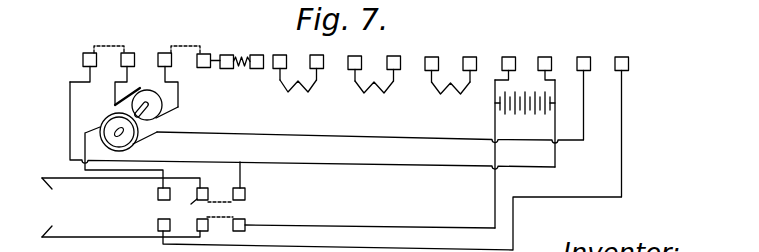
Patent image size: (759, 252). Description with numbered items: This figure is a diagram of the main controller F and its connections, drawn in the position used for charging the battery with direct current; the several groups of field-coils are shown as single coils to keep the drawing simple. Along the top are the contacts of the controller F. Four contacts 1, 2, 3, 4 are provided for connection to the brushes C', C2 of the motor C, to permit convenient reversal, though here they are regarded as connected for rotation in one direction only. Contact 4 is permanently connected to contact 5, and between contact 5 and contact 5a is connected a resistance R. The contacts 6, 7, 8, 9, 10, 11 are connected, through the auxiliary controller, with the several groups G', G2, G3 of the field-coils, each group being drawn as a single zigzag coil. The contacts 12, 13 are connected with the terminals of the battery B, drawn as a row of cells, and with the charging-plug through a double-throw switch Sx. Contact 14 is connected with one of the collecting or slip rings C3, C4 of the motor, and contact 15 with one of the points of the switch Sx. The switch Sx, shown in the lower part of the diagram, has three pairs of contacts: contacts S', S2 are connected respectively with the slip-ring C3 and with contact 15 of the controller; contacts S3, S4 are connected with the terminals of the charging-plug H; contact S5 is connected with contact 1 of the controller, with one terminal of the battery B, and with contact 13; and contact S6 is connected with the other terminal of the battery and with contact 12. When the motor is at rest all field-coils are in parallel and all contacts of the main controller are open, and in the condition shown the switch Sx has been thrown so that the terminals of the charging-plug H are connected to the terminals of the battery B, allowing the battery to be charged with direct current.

The controller F is at (83, 60).
The contact 1 is at (83, 56).
The contact 2 is at (125, 68).
The contact 3 is at (168, 69).
The contact 4 is at (204, 50).
The contact 5 is at (227, 51).
The contact 5a is at (250, 50).
The contact 6 is at (280, 59).
The contact 7 is at (317, 59).
The contact 8 is at (355, 60).
The contact 9 is at (394, 60).
The contact 10 is at (431, 61).
The contact 11 is at (470, 61).
The contact 12 is at (506, 60).
The contact 13 is at (546, 60).
The contact 14 is at (585, 90).
The contact 15 is at (623, 119).
The resistance R is at (243, 67).
The group of field-coils G' is at (298, 98).
The group of field-coils G2 is at (374, 99).
The group of field-coils G3 is at (451, 100).
The battery B is at (525, 149).
The armature C is at (151, 101).
The brush C' is at (132, 86).
The brush C2 is at (180, 109).
The slip-ring C3 is at (103, 121).
The slip-ring C4 is at (155, 144).
The charging-plug H is at (52, 207).
The switch contact S' is at (145, 195).
The switch contact S2 is at (158, 225).
The switch contact S3 is at (208, 189).
The switch contact S4 is at (208, 226).
The switch contact S5 is at (245, 192).
The switch contact S6 is at (245, 229).
The double-throw switch Sx is at (184, 207).